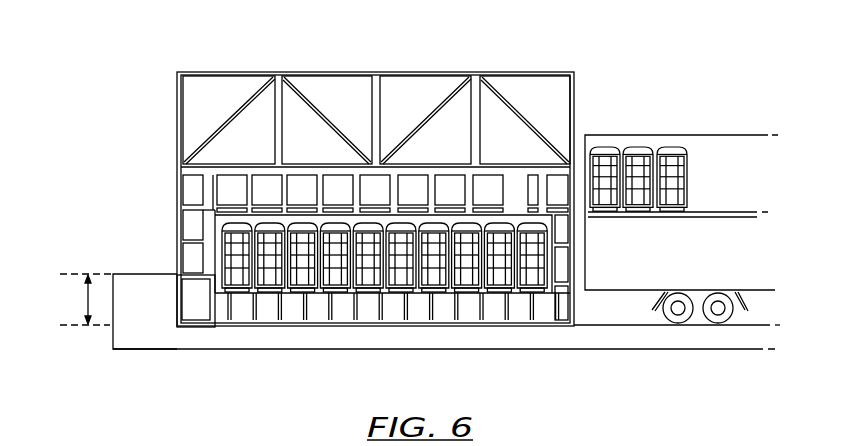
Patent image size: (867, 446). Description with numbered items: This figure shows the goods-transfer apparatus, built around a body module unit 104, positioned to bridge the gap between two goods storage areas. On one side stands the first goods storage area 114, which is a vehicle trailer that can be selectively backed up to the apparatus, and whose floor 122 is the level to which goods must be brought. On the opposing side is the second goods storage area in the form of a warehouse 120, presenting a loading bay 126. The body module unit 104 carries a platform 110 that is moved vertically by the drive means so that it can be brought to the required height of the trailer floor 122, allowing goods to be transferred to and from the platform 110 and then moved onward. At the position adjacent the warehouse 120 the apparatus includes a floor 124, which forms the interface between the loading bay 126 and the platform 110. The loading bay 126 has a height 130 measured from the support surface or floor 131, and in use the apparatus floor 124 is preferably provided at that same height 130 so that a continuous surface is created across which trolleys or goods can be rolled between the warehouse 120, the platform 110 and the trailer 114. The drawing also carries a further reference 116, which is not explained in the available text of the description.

The body module unit 104 is at (398, 88).
The support frame 116 is at (575, 82).
The first goods storage area 114 is at (636, 176).
The floor of the first storage area 122 is at (723, 213).
The floor 124 is at (193, 270).
The platform 110 is at (223, 308).
The warehouse 120 is at (117, 280).
The loading bay 126 is at (160, 302).
The height 130 is at (75, 292).
The support surface or floor 131 is at (362, 323).